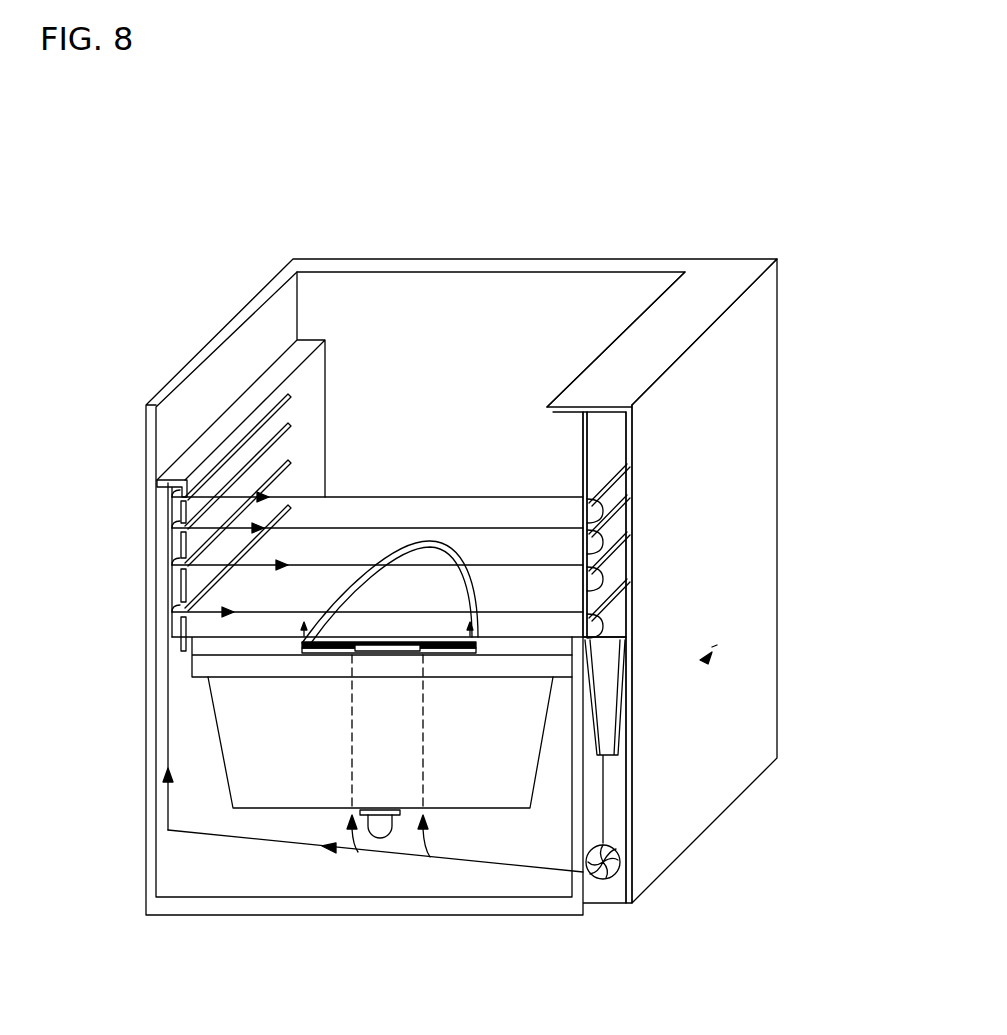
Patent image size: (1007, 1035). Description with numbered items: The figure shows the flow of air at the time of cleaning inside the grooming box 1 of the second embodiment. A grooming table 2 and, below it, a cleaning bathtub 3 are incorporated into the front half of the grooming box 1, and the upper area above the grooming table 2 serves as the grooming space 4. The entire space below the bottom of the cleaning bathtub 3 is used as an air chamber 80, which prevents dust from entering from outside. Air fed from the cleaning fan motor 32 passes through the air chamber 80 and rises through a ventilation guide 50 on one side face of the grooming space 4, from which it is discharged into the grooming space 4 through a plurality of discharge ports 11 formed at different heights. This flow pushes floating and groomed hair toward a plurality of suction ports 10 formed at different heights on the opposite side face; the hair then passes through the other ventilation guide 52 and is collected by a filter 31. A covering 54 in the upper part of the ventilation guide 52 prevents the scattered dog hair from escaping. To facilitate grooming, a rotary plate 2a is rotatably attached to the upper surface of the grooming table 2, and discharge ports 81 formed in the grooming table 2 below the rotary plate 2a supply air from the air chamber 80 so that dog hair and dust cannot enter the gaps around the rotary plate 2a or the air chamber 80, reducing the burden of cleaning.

The grooming box 1 is at (407, 260).
The grooming table 2 is at (253, 645).
The rotary plate 2a is at (448, 630).
The cleaning bathtub 3 is at (268, 790).
The grooming space 4 is at (407, 470).
The suction ports 10 is at (632, 458).
The discharge ports 11 is at (280, 403).
The filter 31 is at (620, 723).
The cleaning fan motor 32 is at (612, 878).
The ventilation guide 50 is at (165, 597).
The ventilation guide 52 is at (603, 432).
The covering 54 is at (658, 330).
The air chamber 80 is at (327, 875).
The discharge ports 81 is at (352, 657).